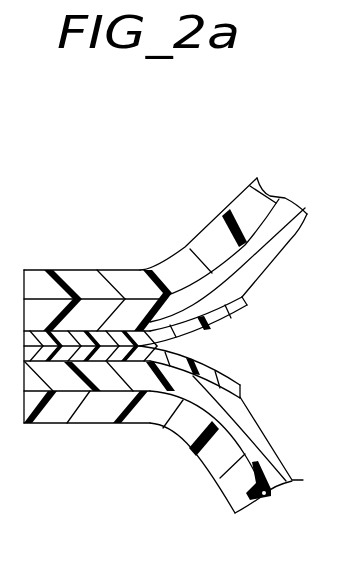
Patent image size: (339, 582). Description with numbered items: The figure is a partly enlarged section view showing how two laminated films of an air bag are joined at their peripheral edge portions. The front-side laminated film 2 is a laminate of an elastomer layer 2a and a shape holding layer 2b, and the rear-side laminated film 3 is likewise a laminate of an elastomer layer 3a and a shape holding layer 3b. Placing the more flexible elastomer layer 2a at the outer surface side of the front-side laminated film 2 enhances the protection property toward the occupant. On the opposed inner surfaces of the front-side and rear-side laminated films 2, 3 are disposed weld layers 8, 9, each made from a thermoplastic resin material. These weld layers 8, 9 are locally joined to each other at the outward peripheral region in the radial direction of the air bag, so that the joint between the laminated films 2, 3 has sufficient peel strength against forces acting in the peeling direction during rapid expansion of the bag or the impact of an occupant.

The front-side laminated film 2 is at (88, 266).
The elastomer layer 2a is at (206, 234).
The shape holding layer 2b is at (268, 257).
The weld layer 8 is at (224, 319).
The rear-side laminated film 3 is at (82, 434).
The elastomer layer 3a is at (182, 429).
The shape holding layer 3b is at (253, 431).
The weld layer 9 is at (218, 374).